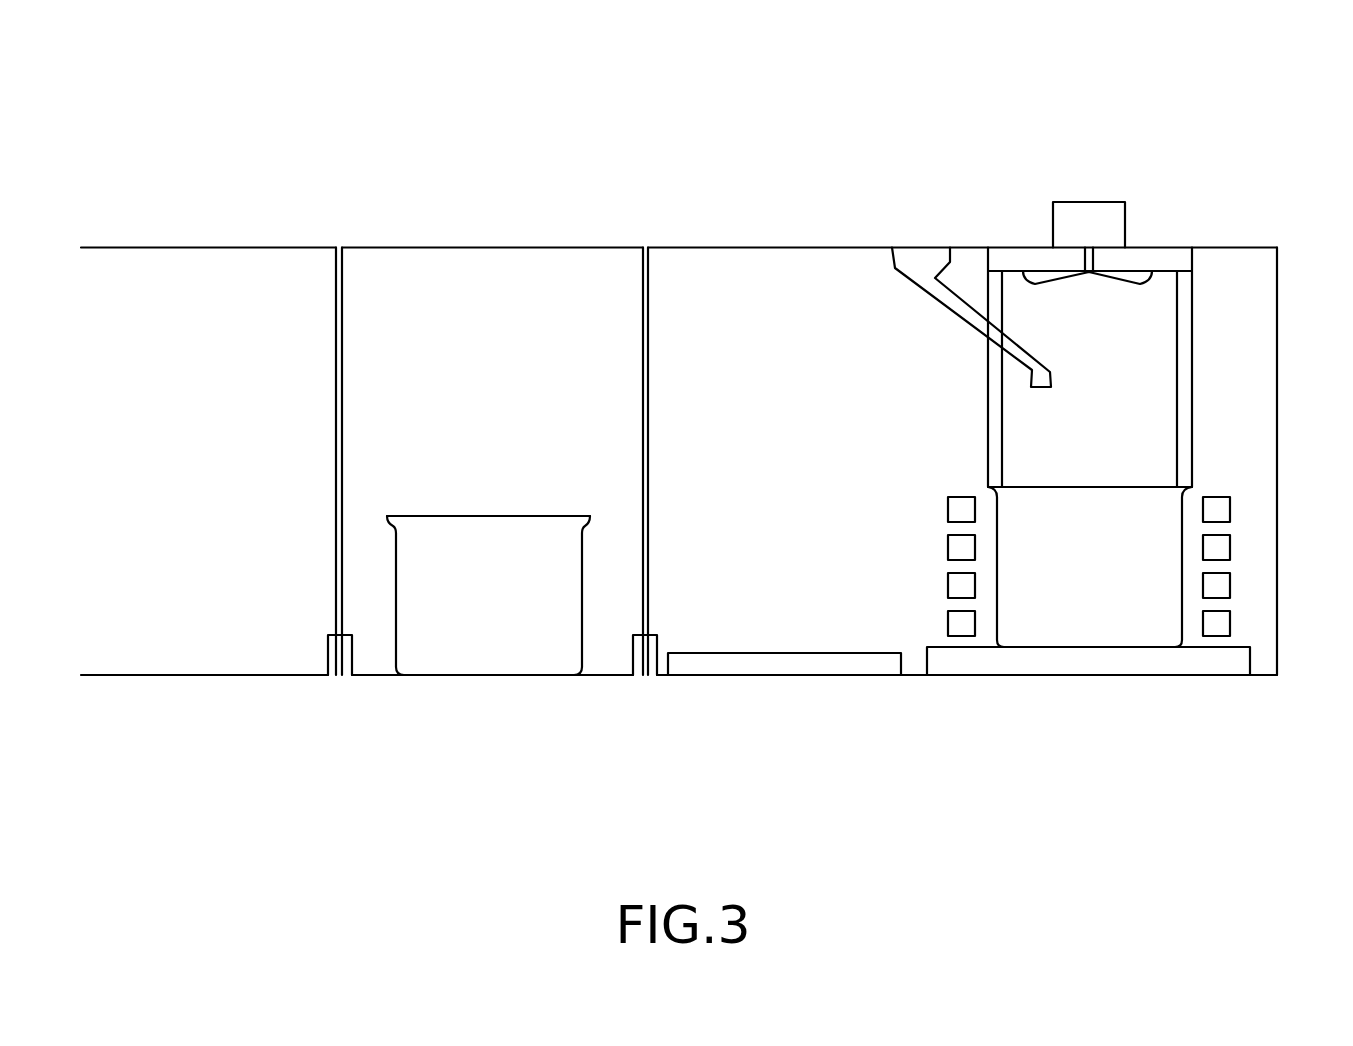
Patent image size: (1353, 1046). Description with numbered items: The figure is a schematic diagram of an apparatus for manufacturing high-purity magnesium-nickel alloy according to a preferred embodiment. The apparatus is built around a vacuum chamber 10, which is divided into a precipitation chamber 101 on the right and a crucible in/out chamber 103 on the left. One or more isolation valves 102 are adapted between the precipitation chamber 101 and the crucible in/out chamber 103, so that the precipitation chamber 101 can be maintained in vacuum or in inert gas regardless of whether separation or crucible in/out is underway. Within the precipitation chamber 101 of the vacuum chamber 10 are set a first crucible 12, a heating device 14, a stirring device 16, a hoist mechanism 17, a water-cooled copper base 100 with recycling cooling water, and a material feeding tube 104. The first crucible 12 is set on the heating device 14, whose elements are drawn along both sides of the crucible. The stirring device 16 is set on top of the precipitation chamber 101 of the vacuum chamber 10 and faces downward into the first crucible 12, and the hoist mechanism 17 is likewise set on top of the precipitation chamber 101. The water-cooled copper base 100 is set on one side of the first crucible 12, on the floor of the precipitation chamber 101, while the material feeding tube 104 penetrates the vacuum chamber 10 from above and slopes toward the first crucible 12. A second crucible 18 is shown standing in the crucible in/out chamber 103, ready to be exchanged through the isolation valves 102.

The vacuum chamber 10 is at (857, 197).
The first crucible 12 is at (1077, 627).
The heating device 14 is at (1217, 497).
The stirring device 16 is at (1125, 225).
The hoist mechanism 17 is at (1148, 260).
The second crucible 18 is at (450, 574).
The water-cooled copper base 100 is at (725, 665).
The precipitation chamber 101 is at (777, 268).
The isolation valve 102 is at (335, 273).
The crucible in/out chamber 103 is at (455, 273).
The material feeding tube 104 is at (888, 268).